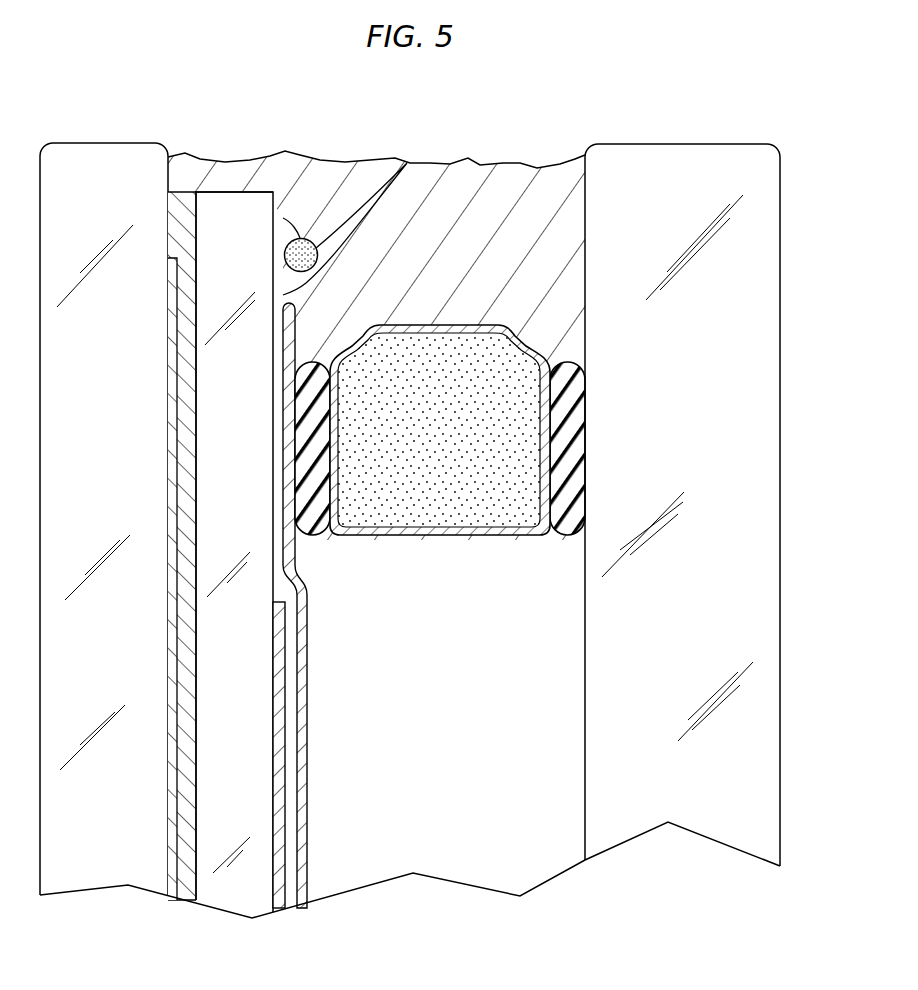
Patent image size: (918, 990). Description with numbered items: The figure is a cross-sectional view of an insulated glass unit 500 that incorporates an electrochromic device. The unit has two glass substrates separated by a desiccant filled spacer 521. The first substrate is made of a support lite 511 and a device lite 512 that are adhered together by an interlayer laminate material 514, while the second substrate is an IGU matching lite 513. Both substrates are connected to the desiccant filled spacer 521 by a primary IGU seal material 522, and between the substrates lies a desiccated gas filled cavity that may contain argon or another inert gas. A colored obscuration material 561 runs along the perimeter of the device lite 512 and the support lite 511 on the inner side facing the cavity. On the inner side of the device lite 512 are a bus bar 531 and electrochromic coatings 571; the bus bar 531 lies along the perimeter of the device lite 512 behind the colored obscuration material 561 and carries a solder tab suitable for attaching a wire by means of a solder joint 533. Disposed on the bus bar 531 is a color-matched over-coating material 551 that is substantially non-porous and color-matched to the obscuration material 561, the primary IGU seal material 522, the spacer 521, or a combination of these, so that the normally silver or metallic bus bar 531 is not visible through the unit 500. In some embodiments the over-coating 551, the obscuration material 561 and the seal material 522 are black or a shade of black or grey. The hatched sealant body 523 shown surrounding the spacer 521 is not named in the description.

The insulated glass unit 500 is at (616, 98).
The support lite 511 is at (100, 164).
The device lite 512 is at (226, 206).
The IGU matching lite 513 is at (676, 168).
The interlayer laminate material 514 is at (180, 192).
The desiccant filled spacer 521 is at (428, 538).
The primary IGU seal material 522 is at (313, 538).
The sealant 523 is at (410, 163).
The bus bar 531 is at (283, 218).
The solder joint 533 is at (305, 238).
The color-matched over-coating material 551 is at (308, 870).
The colored obscuration material 561 is at (172, 478).
The electrochromic coatings 571 is at (280, 912).